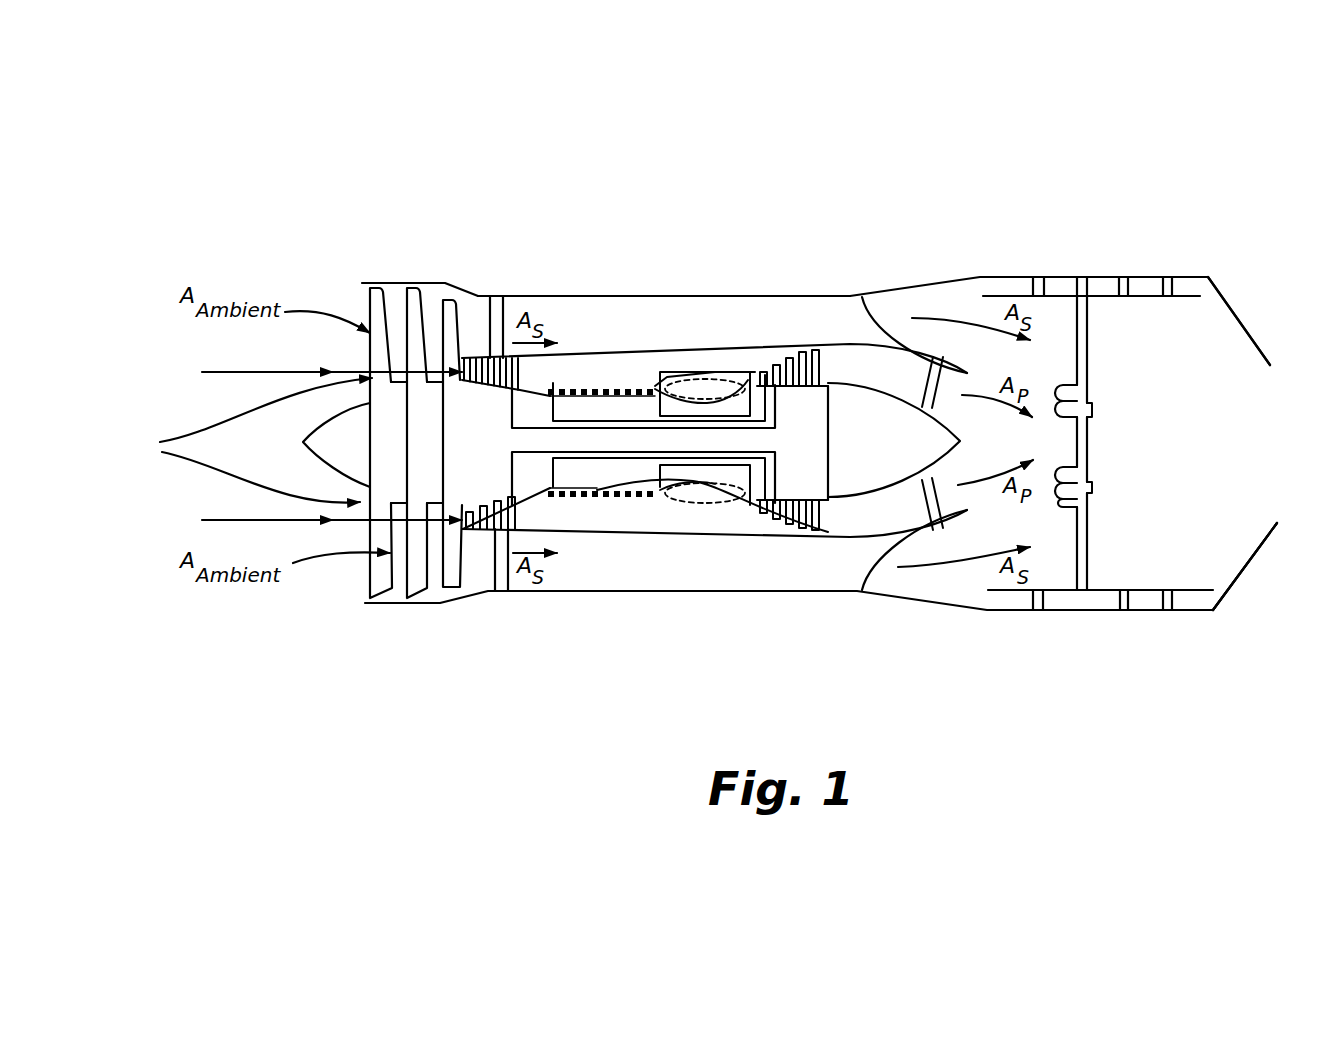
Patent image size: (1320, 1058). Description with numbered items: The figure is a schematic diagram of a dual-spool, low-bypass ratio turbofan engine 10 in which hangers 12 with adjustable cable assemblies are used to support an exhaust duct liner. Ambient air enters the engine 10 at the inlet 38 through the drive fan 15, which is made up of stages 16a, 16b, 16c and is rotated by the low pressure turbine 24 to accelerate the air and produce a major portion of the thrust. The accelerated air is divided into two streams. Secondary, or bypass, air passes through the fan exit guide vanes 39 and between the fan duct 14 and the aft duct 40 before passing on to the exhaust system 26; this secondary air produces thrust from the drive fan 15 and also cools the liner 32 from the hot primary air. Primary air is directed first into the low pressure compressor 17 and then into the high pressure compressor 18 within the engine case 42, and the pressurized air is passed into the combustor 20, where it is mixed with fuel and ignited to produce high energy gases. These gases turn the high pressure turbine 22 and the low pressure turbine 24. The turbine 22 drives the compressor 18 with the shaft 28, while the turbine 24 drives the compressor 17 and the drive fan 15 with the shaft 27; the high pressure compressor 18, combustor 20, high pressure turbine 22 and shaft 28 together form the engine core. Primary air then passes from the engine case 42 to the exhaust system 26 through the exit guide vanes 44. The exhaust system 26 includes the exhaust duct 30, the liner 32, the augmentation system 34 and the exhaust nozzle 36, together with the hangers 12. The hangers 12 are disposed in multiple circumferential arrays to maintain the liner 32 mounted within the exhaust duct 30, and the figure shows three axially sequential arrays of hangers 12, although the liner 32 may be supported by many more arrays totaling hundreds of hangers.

The turbofan engine 10 is at (475, 247).
The hangers 12 is at (1037, 289).
The fan duct 14 is at (637, 296).
The drive fan 15 is at (440, 451).
The fan stage 16a is at (375, 572).
The fan stage 16b is at (410, 587).
The fan stage 16c is at (448, 556).
The low pressure compressor 17 is at (477, 535).
The high pressure compressor 18 is at (592, 473).
The combustor 20 is at (718, 497).
The high pressure turbine 22 is at (760, 488).
The low pressure turbine 24 is at (800, 520).
The exhaust system 26 is at (1085, 262).
The shaft 27 is at (722, 435).
The shaft 28 is at (733, 465).
The exhaust duct 30 is at (1063, 288).
The liner 32 is at (1188, 290).
The augmentation system 34 is at (1102, 388).
The exhaust nozzle 36 is at (1250, 562).
The inlet 38 is at (291, 446).
The fan exit guide vanes 39 is at (496, 302).
The aft duct 40 is at (650, 350).
The engine case 42 is at (658, 385).
The exit guide vanes 44 is at (863, 297).